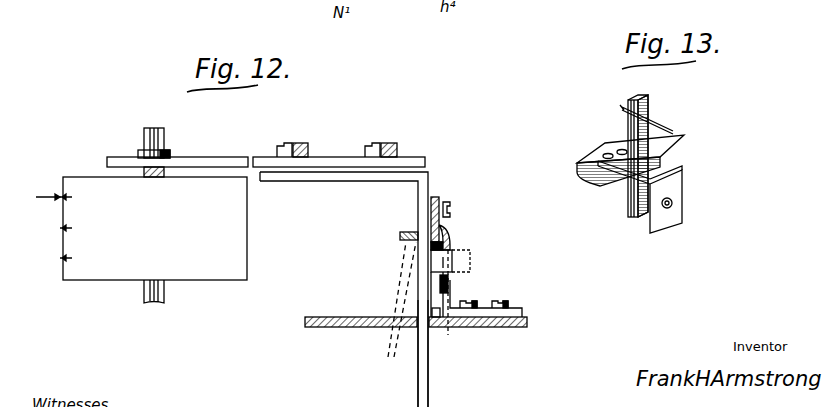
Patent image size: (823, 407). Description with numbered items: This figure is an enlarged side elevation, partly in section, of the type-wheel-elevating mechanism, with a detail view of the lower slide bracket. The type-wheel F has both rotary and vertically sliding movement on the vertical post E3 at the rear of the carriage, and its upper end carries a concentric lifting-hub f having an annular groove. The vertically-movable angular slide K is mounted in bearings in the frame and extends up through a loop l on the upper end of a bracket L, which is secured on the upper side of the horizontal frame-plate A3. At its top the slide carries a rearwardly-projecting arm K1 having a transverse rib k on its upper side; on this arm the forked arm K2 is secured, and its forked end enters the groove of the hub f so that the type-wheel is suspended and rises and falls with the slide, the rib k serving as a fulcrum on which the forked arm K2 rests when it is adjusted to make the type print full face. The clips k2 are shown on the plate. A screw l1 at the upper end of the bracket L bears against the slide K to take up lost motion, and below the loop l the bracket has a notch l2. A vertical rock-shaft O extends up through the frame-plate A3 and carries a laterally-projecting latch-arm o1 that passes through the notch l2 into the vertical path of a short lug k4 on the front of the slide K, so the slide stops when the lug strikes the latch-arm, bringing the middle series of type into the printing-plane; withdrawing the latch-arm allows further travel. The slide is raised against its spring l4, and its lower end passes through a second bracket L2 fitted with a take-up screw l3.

In FIG. 12, the type-wheel F is at (141, 228).
In FIG. 12, the vertical post E3 is at (150, 130).
In FIG. 12, the lifting-hub f is at (142, 153).
In FIG. 12, the forked arm K2 is at (207, 160).
In FIG. 12, the clips k2 is at (287, 143).
In FIG. 12, the transverse rib k is at (343, 168).
In FIG. 12, the rearwardly-projecting arm K1 is at (358, 178).
In FIG. 12, the angular slide K is at (428, 358).
In FIG. 13, the angular slide K is at (628, 125).
In FIG. 12, the vertical rock-shaft O is at (450, 282).
In FIG. 12, the screw l1 is at (450, 208).
In FIG. 12, the loop l is at (402, 246).
In FIG. 12, the notch l2 is at (452, 253).
In FIG. 12, the latch-arm o1 is at (452, 266).
In FIG. 12, the bracket L is at (450, 292).
In FIG. 12, the frame-plate A3 is at (358, 312).
In FIG. 12, the lug k4 is at (432, 316).
In FIG. 13, the spring l4 is at (657, 119).
In FIG. 13, the second bracket L2 is at (656, 178).
In FIG. 13, the take-up screw l3 is at (672, 203).